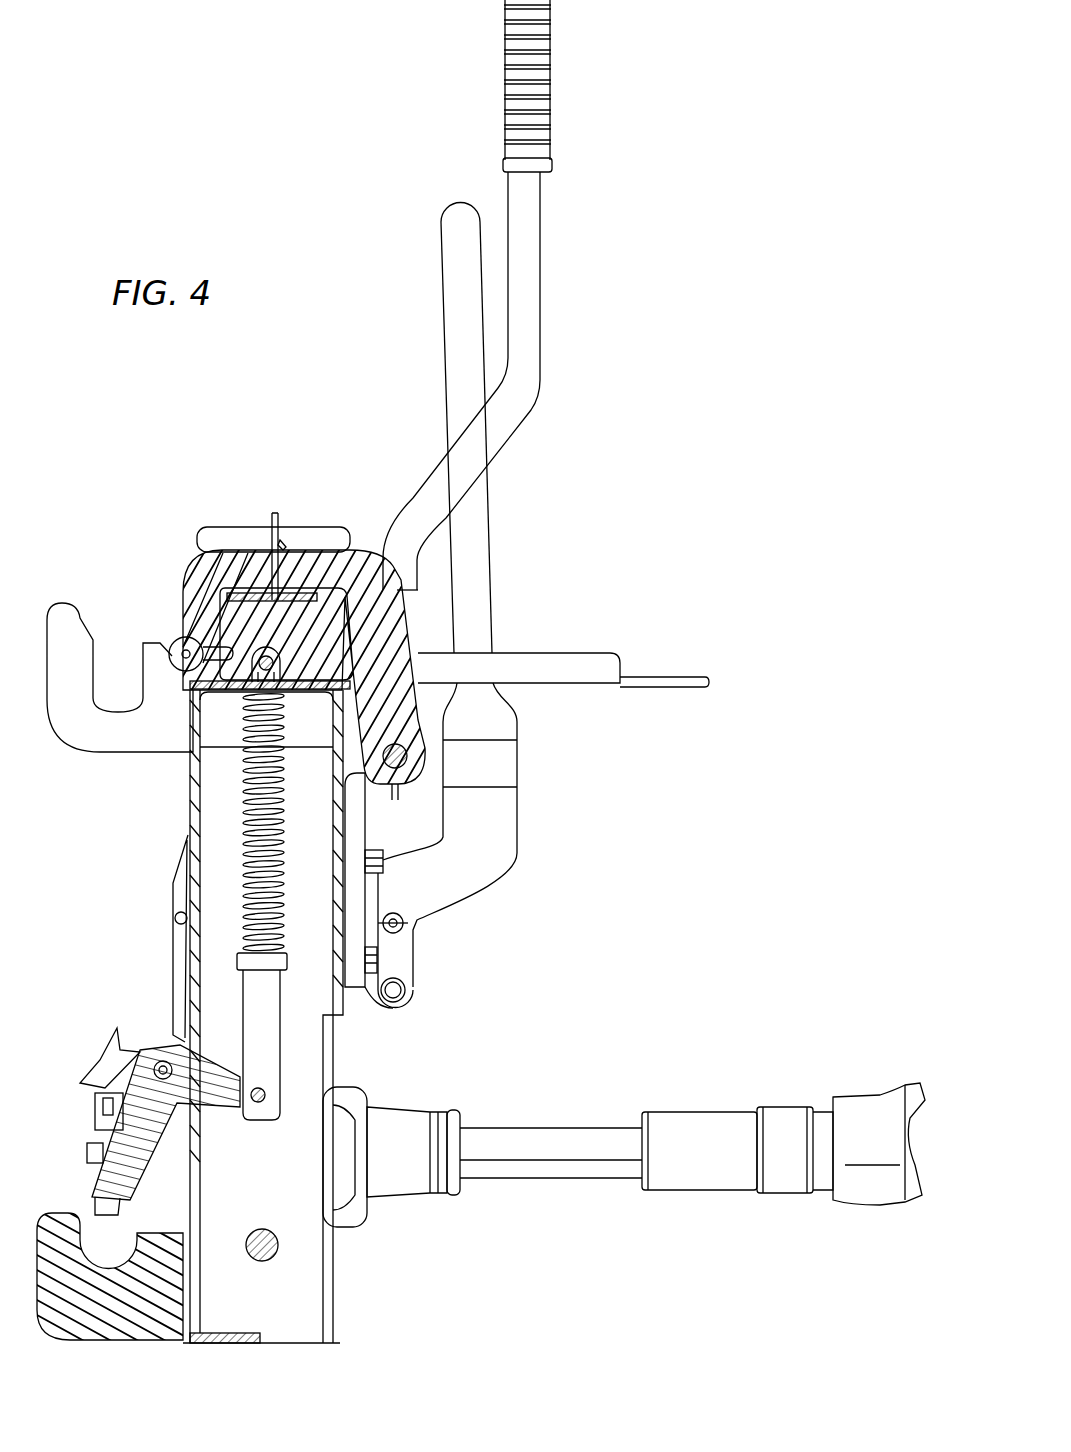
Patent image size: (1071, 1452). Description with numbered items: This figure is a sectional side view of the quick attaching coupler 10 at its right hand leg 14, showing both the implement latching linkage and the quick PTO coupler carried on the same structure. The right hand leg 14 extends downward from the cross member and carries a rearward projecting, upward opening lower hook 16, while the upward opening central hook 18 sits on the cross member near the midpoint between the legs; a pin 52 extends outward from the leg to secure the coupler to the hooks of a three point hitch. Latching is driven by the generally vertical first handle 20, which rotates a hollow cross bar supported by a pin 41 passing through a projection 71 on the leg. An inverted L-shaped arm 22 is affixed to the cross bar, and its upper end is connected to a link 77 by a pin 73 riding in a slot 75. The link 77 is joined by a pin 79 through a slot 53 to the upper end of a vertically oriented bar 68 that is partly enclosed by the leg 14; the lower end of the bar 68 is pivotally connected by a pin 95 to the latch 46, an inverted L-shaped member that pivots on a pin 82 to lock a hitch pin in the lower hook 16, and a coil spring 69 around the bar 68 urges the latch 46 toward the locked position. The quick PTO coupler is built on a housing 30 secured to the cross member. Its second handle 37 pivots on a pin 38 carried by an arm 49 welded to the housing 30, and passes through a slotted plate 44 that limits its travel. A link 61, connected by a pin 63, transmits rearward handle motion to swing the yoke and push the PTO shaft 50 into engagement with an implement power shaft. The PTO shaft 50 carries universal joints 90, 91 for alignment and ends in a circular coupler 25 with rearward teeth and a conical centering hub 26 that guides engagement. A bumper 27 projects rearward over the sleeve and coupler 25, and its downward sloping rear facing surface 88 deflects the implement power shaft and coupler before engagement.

The quick attaching coupler 10 is at (697, 458).
The right hand leg 14 is at (330, 1287).
The lower hook 16 is at (58, 1215).
The central hook 18 is at (60, 616).
The first handle 20 is at (522, 278).
The arm 22 is at (243, 550).
The coupler 25 is at (95, 1128).
The centering hub 26 is at (90, 1150).
The bumper 27 is at (108, 1058).
The housing 30 is at (348, 1013).
The second handle 37 is at (456, 308).
The pin 38 is at (410, 1000).
The pin 41 is at (410, 757).
The slotted plate 44 is at (586, 652).
The latch 46 is at (143, 1148).
The arm 49 is at (385, 1008).
The PTO shaft 50 is at (588, 1130).
The pin 52 is at (263, 1255).
The slot 53 is at (279, 672).
The link 61 is at (380, 872).
The pin 63 is at (405, 927).
The bar 68 is at (266, 978).
The coil spring 69 is at (285, 858).
The projection 71 is at (368, 798).
The pin 73 is at (185, 647).
The slot 75 is at (190, 668).
The link 77 is at (222, 622).
The pin 79 is at (262, 656).
The pin 82 is at (160, 1066).
The sloped surface 88 is at (118, 1040).
The universal joint 90 is at (436, 1196).
The universal joint 91 is at (905, 1212).
The pin 95 is at (262, 1102).